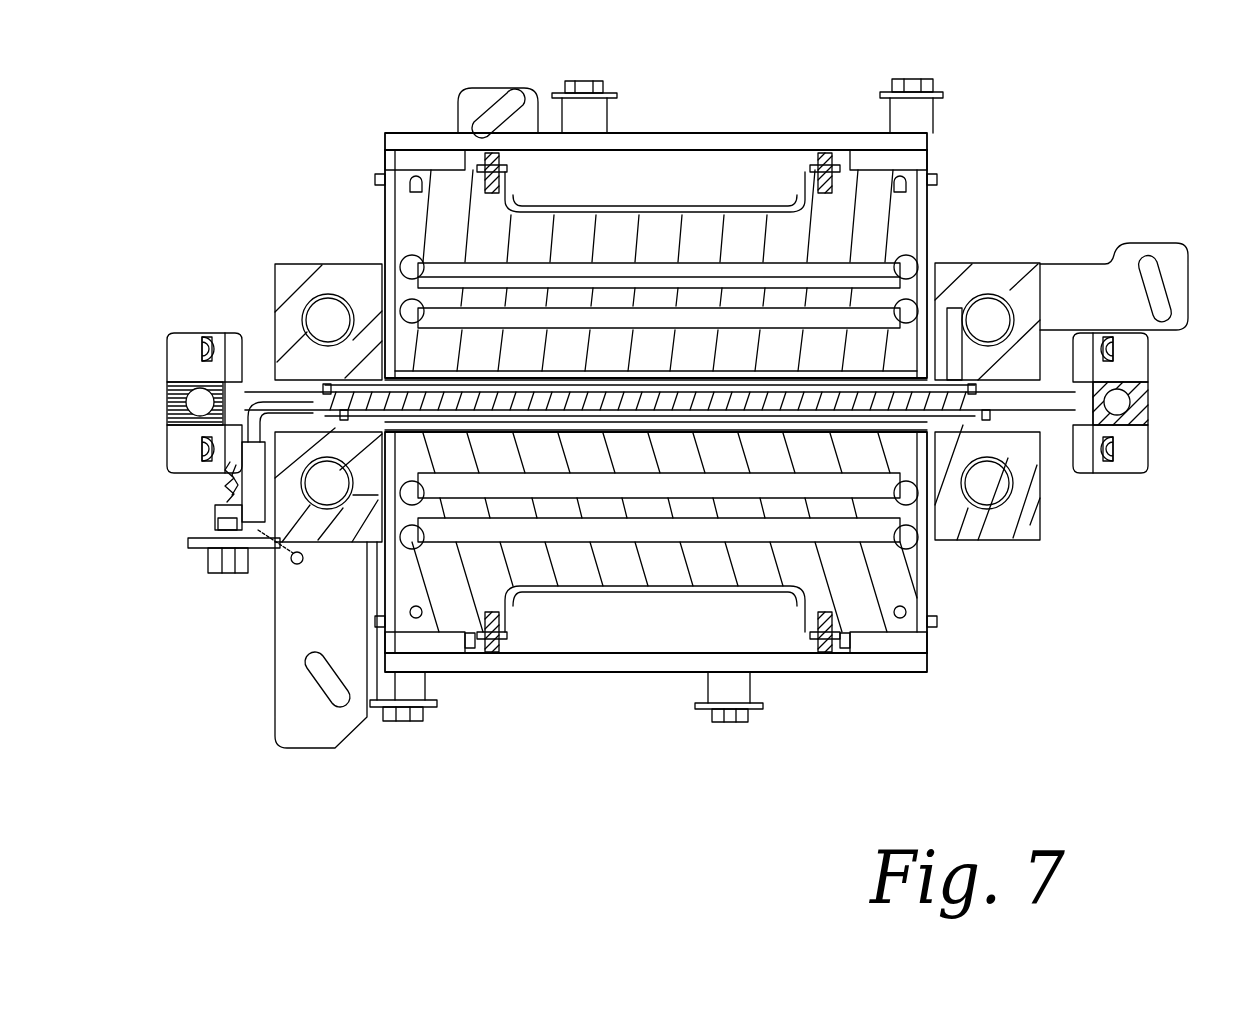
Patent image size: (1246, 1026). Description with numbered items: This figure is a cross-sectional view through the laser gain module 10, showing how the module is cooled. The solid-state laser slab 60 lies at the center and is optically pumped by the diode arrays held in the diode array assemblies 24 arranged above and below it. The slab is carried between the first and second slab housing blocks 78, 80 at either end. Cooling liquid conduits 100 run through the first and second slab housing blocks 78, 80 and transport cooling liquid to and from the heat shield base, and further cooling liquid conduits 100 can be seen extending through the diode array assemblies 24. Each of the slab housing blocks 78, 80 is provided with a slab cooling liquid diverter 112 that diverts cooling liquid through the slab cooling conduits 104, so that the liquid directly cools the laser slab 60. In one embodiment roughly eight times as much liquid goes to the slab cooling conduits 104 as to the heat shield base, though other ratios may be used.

The laser gain module 10 is at (1013, 90).
The diode array assemblies 24 is at (447, 183).
The solid-state laser slab 60 is at (690, 392).
The first slab housing block 78 is at (240, 246).
The second slab housing block 80 is at (1048, 578).
The cooling liquid conduits 100 is at (830, 272).
The slab cooling conduits 104 is at (270, 398).
The slab cooling liquid diverters 112 is at (337, 367).